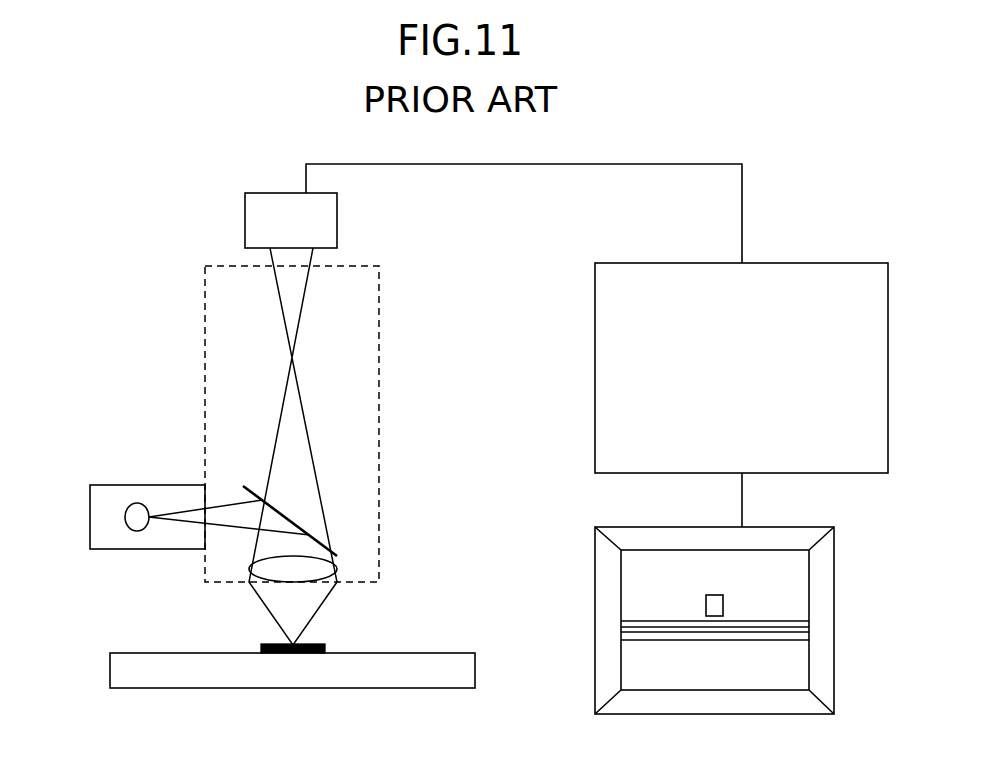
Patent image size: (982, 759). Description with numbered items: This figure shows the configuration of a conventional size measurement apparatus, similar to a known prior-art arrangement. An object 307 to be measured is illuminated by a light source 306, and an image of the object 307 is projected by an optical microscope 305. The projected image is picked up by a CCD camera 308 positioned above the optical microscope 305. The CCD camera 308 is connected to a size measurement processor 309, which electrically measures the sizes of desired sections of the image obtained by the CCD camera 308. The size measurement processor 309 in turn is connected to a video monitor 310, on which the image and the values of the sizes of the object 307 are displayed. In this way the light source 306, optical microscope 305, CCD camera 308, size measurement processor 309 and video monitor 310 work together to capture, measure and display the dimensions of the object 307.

The optical microscope 305 is at (205, 362).
The light source 306 is at (125, 517).
The object 307 is at (318, 648).
The CCD camera 308 is at (337, 218).
The size measurement processor 309 is at (782, 263).
The video monitor 310 is at (782, 527).